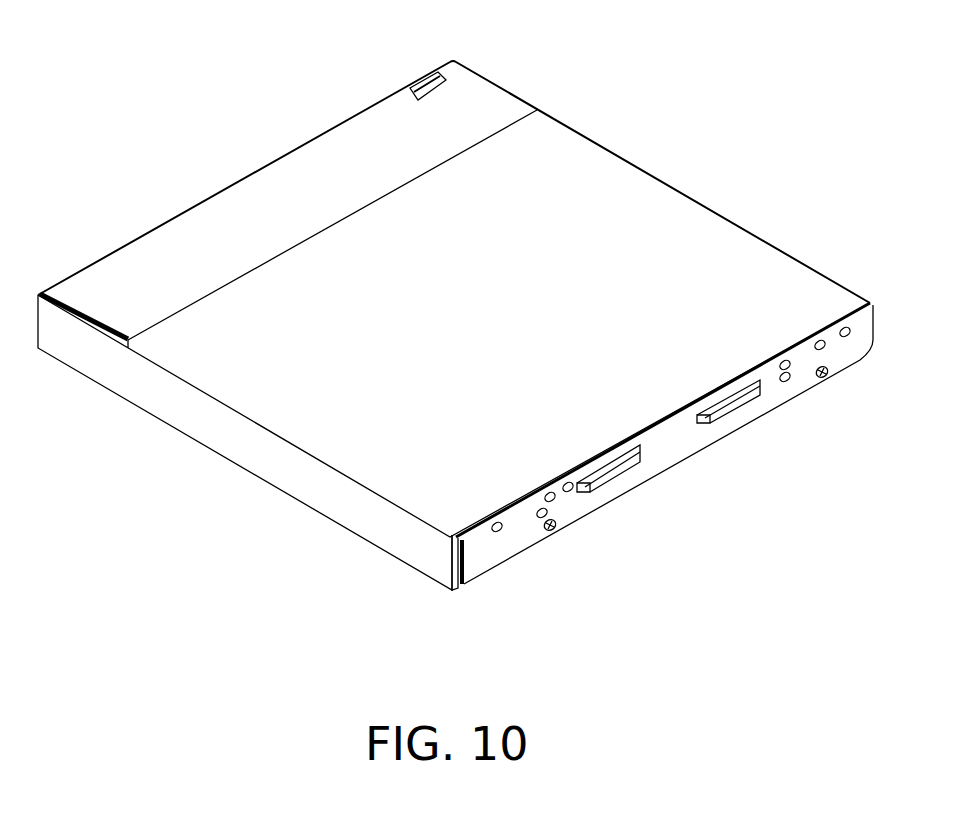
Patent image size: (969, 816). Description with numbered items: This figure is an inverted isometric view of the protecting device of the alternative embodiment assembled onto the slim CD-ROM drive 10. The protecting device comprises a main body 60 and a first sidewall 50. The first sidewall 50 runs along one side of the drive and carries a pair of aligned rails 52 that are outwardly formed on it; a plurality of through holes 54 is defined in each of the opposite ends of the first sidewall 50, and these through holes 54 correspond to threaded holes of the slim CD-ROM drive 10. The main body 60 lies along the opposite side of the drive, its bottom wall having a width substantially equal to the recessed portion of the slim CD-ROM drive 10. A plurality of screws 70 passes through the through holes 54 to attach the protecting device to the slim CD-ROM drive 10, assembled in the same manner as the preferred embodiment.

The slim CD-ROM drive 10 is at (658, 225).
The first sidewall 50 is at (663, 448).
The pair of aligned rails 52 is at (612, 473).
The through holes 54 is at (553, 500).
The main body 60 is at (478, 108).
The screws 70 is at (553, 529).